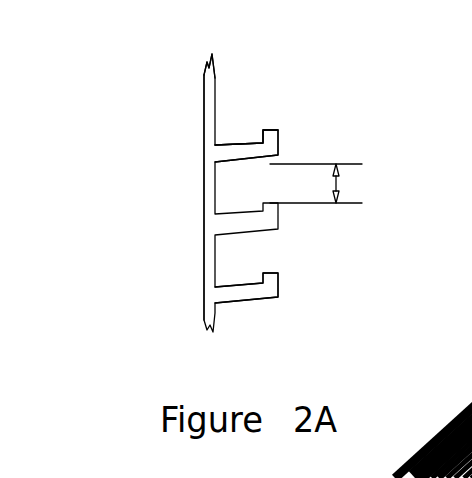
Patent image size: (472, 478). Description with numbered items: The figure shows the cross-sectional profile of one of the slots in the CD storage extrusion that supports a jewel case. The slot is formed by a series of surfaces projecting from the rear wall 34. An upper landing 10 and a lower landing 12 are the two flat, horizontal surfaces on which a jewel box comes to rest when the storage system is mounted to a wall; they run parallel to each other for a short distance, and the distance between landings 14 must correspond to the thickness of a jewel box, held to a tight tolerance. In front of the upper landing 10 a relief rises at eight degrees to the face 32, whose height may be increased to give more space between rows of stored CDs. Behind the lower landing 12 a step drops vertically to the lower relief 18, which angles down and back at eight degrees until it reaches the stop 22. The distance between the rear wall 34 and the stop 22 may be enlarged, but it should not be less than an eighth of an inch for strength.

The upper landing 10 is at (219, 234).
The lower landing 12 is at (220, 157).
The distance between landings 14 is at (345, 183).
The lower relief 18 is at (218, 145).
The stop 22 is at (216, 78).
The face 32 is at (279, 287).
The rear wall 34 is at (204, 177).